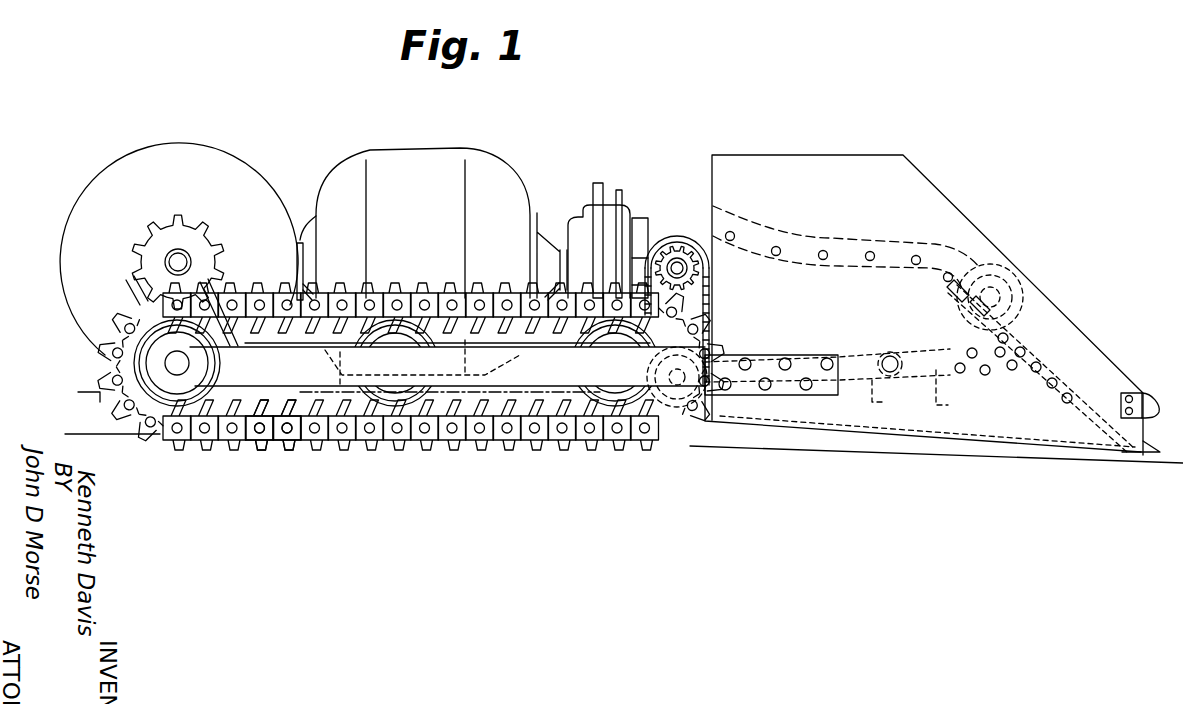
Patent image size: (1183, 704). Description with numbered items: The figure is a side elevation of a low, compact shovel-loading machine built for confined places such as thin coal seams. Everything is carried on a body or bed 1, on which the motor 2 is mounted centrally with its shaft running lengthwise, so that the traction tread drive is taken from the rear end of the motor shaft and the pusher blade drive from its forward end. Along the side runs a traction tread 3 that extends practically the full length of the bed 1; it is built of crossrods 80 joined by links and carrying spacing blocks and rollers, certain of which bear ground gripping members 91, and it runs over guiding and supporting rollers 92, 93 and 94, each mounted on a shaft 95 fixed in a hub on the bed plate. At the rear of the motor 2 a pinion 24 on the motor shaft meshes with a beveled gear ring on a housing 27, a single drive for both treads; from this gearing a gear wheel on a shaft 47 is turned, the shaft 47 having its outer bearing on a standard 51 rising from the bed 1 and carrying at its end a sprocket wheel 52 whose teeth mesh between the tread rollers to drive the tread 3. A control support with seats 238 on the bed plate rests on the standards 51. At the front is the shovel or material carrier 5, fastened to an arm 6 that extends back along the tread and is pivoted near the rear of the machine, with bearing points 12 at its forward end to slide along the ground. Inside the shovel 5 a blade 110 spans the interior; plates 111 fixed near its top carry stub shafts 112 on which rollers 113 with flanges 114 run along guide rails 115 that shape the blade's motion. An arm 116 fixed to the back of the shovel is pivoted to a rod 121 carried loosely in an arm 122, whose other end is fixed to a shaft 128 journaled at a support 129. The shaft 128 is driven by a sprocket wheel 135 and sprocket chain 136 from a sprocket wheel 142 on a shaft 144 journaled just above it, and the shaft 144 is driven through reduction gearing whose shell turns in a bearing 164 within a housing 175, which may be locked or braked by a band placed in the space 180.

The body or bed 1 is at (304, 420).
The motor 2 is at (416, 162).
The traction tread 3 is at (457, 448).
The shovel or material carrier 5 is at (945, 196).
The arm 6 is at (538, 382).
The bearing points 12 is at (1150, 457).
The pinion 24 is at (300, 242).
The housing 27 is at (192, 148).
The shaft 47 is at (170, 262).
The standard 51 is at (135, 293).
The sprocket wheel 52 is at (198, 236).
The crossrods 80 is at (285, 444).
The ground or bottom gripping members 91 is at (255, 444).
The guiding and supporting roller 92 is at (174, 405).
The guiding and supporting roller 93 is at (394, 408).
The guiding and supporting roller 94 is at (613, 402).
The shaft 95 is at (170, 363).
The blade 110 is at (1095, 395).
The plates 111 is at (1020, 302).
The stub shafts 112 is at (1020, 290).
The rollers 113 is at (1012, 275).
The flanges 114 is at (1005, 262).
The guide rails or trackways 115 is at (945, 242).
The arm 116 is at (930, 392).
The rod 121 is at (910, 394).
The arm 122 is at (852, 352).
The shaft 128 is at (675, 440).
The journal or standard 129 is at (692, 326).
The sprocket wheel 135 is at (707, 350).
The sprocket chain 136 is at (714, 313).
The sprocket wheel 142 is at (703, 297).
The shaft 144 is at (688, 270).
The bearing 164 is at (640, 228).
The housing 175 is at (568, 262).
The space 180 is at (610, 208).
The seats 238 is at (88, 396).